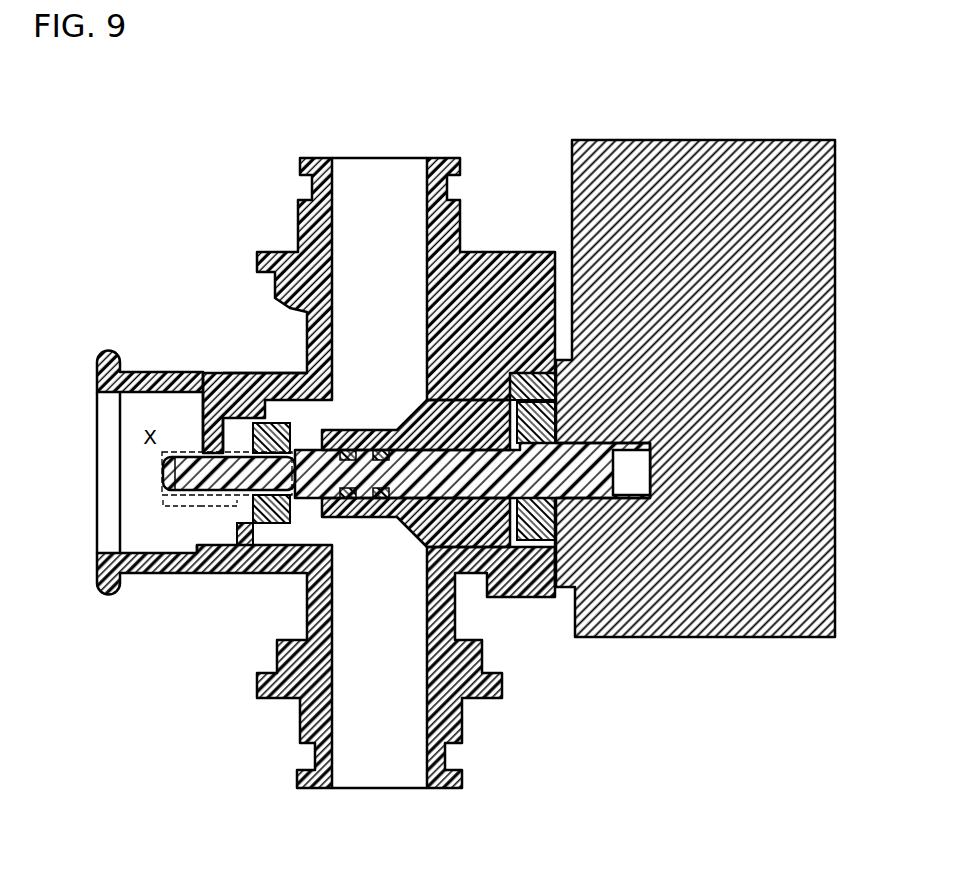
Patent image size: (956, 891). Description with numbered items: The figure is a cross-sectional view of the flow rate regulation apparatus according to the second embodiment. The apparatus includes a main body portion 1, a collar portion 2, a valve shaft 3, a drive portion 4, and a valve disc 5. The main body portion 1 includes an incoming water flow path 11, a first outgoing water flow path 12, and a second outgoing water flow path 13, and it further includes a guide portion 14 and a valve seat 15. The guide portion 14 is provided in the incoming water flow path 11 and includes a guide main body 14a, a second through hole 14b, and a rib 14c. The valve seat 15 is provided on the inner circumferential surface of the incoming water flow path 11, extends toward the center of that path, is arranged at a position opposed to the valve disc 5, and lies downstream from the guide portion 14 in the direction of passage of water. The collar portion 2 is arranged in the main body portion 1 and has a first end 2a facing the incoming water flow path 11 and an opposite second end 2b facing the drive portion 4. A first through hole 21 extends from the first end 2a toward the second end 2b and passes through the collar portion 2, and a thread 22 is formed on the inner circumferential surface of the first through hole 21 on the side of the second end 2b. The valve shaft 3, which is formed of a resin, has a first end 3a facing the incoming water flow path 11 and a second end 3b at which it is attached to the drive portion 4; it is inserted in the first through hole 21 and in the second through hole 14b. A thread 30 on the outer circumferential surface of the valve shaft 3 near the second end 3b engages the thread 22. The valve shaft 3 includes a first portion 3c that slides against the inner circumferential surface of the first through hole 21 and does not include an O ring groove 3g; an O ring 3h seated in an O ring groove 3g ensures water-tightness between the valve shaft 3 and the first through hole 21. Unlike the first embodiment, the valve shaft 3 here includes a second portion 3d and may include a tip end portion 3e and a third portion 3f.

The main body portion 1 is at (312, 218).
The collar portion 2 is at (537, 597).
The first end 2a is at (352, 545).
The second end 2b is at (578, 525).
The valve shaft 3 is at (293, 500).
The first end 3a is at (252, 548).
The second end 3b is at (655, 490).
The first portion 3c is at (300, 400).
The second portion 3d is at (218, 519).
The tip end portion 3e is at (181, 519).
The third portion 3f is at (271, 481).
The O ring groove 3g is at (392, 430).
The O ring 3h is at (350, 430).
The drive portion 4 is at (750, 625).
The valve disc 5 is at (265, 380).
The incoming water flow path 11 is at (116, 546).
The first outgoing water flow path 12 is at (418, 720).
The second outgoing water flow path 13 is at (376, 180).
The guide portion 14 is at (117, 300).
The guide main body 14a is at (202, 502).
The second through hole 14b is at (220, 452).
The rib 14c is at (200, 447).
The valve seat 15 is at (242, 550).
The first through hole 21 is at (372, 520).
The thread 22 is at (511, 373).
The thread 30 is at (536, 471).